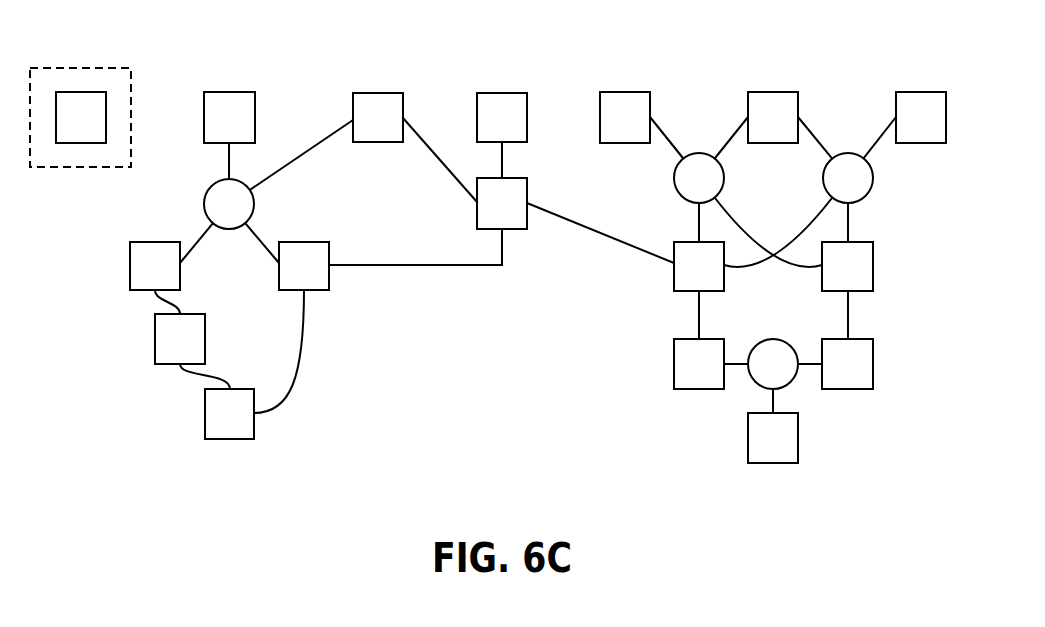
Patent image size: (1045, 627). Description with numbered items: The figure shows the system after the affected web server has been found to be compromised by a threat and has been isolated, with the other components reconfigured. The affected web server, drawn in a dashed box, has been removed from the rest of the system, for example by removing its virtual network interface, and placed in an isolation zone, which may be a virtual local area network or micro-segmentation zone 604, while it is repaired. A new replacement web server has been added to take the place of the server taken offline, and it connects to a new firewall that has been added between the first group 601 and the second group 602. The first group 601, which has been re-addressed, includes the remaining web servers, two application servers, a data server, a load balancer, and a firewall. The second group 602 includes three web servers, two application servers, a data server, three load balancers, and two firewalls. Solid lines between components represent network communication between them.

The first group 601 is at (173, 54).
The second group 602 is at (692, 53).
The micro-segmentation zone 604 is at (76, 178).